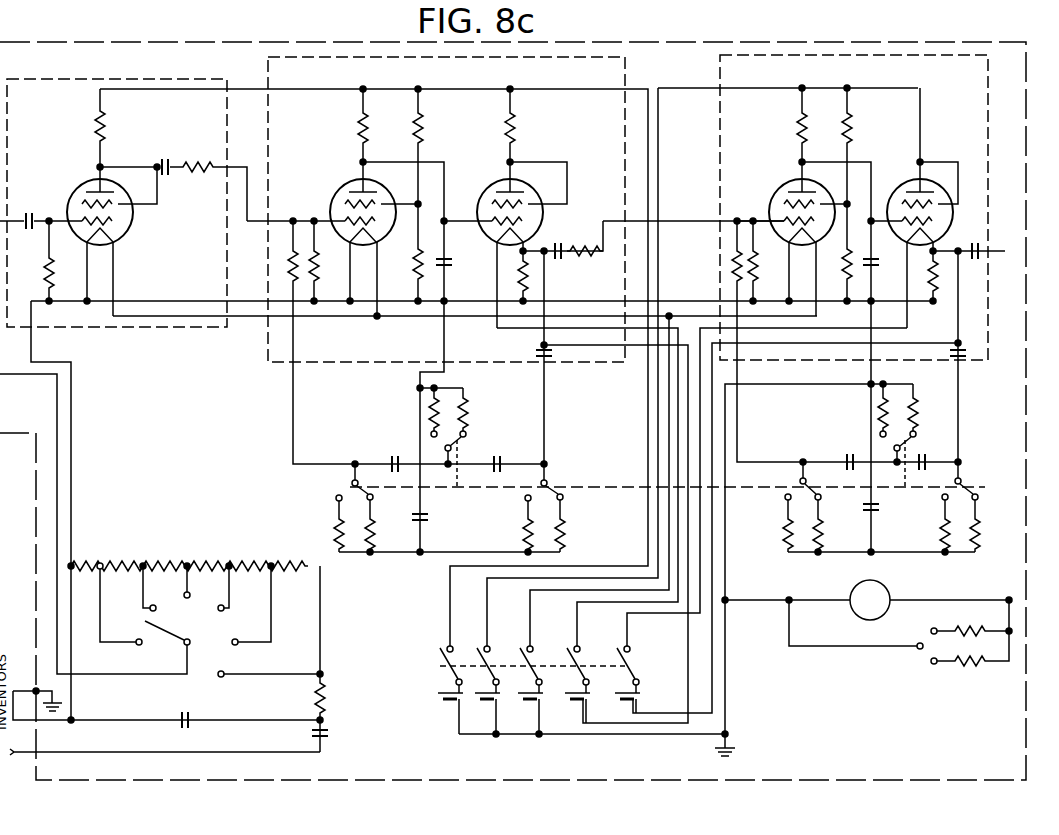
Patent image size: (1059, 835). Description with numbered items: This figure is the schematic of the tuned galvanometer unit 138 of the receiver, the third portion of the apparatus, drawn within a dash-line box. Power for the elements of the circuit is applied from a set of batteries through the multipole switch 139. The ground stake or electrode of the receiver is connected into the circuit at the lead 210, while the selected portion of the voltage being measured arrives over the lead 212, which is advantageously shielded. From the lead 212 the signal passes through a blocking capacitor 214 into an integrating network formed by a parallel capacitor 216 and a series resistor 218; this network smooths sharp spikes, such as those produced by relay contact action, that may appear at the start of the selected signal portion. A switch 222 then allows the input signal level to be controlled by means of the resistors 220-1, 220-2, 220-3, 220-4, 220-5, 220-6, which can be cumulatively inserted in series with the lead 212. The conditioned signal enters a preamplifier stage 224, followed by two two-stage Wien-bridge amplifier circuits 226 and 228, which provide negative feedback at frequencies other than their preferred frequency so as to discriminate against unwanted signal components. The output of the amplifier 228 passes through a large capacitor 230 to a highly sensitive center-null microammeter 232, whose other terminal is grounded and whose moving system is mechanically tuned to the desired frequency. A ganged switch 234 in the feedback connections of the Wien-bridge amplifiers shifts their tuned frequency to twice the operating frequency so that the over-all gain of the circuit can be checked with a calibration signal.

The tuned galvanometer unit 138 is at (212, 42).
The preamplifier stage 224 is at (150, 79).
The two-stage Wien-bridge amplifier circuit 226 is at (625, 57).
The two-stage Wien-bridge amplifier circuit 228 is at (720, 80).
The large capacitor 230 is at (972, 250).
The microammeter 232 is at (853, 590).
The ganged switch 234 is at (580, 487).
The multipole switch 139 is at (443, 651).
The resistor 220-1 is at (72, 563).
The resistor 220-2 is at (101, 563).
The resistor 220-3 is at (185, 530).
The resistor 220-4 is at (172, 563).
The resistor 220-5 is at (273, 522).
The resistor 220-6 is at (258, 563).
The switch 222 is at (157, 632).
The parallel capacitor 216 is at (188, 712).
The series resistor 218 is at (324, 690).
The blocking capacitor 214 is at (323, 742).
The lead 210 is at (45, 722).
The lead 212 is at (45, 752).